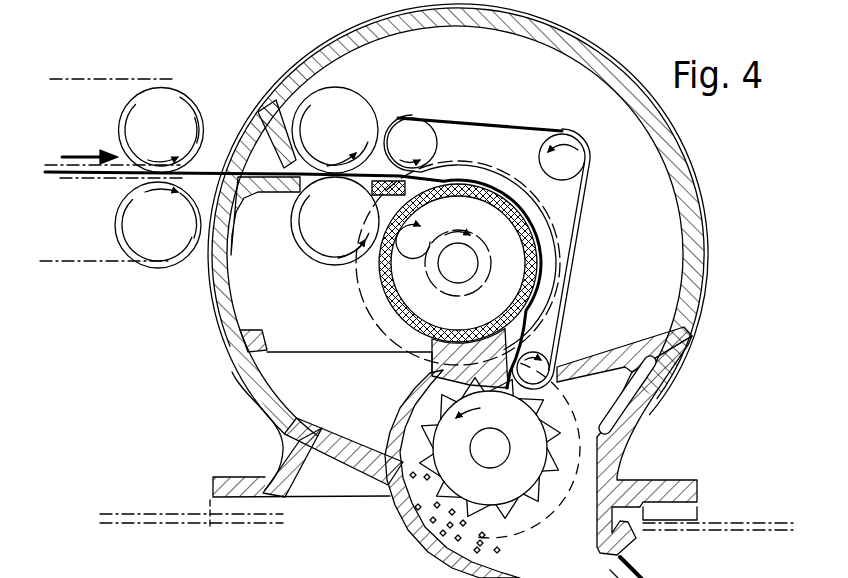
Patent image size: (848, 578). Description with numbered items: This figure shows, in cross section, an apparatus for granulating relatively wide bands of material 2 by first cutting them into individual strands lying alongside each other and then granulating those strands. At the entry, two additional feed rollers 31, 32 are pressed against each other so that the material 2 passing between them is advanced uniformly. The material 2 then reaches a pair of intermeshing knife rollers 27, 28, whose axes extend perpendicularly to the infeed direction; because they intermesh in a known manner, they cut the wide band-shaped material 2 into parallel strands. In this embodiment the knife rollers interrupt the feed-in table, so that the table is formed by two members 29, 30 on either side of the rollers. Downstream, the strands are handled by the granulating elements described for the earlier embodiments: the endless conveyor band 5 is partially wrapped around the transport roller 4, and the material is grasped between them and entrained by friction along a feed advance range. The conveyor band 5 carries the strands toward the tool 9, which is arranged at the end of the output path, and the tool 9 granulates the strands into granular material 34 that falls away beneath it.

The material 2 is at (208, 168).
The transport roller 4 is at (428, 265).
The conveyor band 5 is at (500, 127).
The tool 9 is at (457, 473).
The knife roller 27 is at (312, 102).
The knife roller 28 is at (302, 253).
The feed-in table member 29 is at (295, 238).
The feed-in table member 30 is at (399, 177).
The feed roller 31 is at (158, 97).
The feed roller 32 is at (137, 243).
The granular material 34 is at (440, 558).